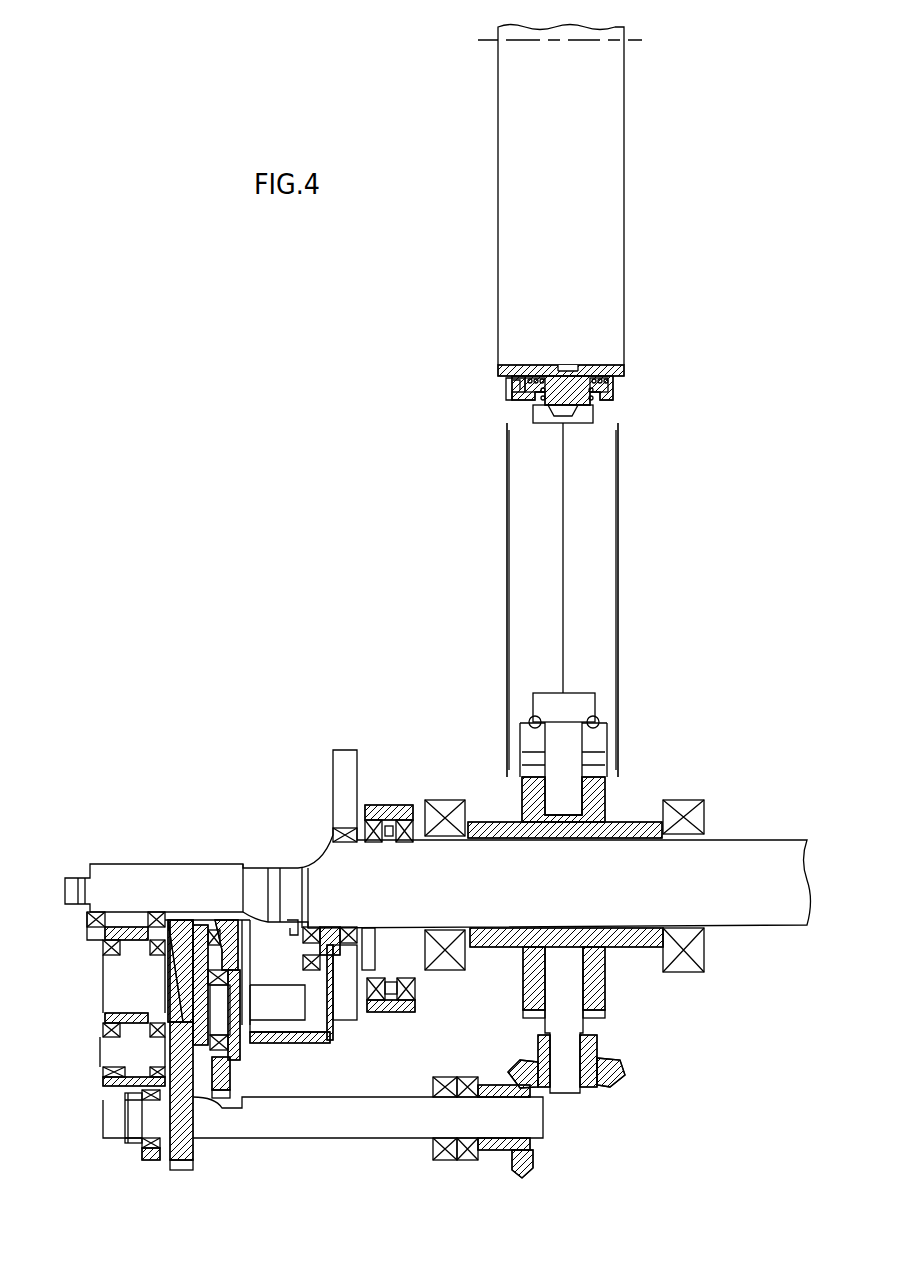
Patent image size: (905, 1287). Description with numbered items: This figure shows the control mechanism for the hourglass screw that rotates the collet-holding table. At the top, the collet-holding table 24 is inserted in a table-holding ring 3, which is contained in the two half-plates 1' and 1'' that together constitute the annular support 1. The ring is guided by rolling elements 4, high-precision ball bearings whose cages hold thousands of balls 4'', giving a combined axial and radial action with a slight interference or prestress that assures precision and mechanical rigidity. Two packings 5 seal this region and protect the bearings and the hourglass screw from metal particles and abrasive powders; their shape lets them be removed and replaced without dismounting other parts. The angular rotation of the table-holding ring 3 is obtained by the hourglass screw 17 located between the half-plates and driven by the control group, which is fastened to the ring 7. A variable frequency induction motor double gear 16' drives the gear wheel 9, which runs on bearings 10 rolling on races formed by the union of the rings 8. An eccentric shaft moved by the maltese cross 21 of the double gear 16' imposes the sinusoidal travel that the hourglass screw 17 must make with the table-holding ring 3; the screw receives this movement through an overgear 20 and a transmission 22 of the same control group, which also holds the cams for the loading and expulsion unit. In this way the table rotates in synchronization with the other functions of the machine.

The collet-holding table 24 is at (622, 248).
The table-holding ring 3 is at (575, 398).
The packings 5 is at (612, 392).
The balls 4'' is at (490, 401).
The rolling elements 4 is at (592, 423).
The annular support 1 is at (579, 600).
The half-plate 1' is at (489, 600).
The half-plate 1'' is at (633, 600).
The ring 7 is at (581, 702).
The gear wheel 9 is at (530, 736).
The bearings 10 is at (601, 718).
The rings 8 is at (612, 773).
The double gear 16' is at (589, 1020).
The hourglass screw 17 is at (603, 1082).
The transmission 22 is at (188, 1150).
The overgear 20 is at (165, 980).
The maltese cross 21 is at (352, 1008).